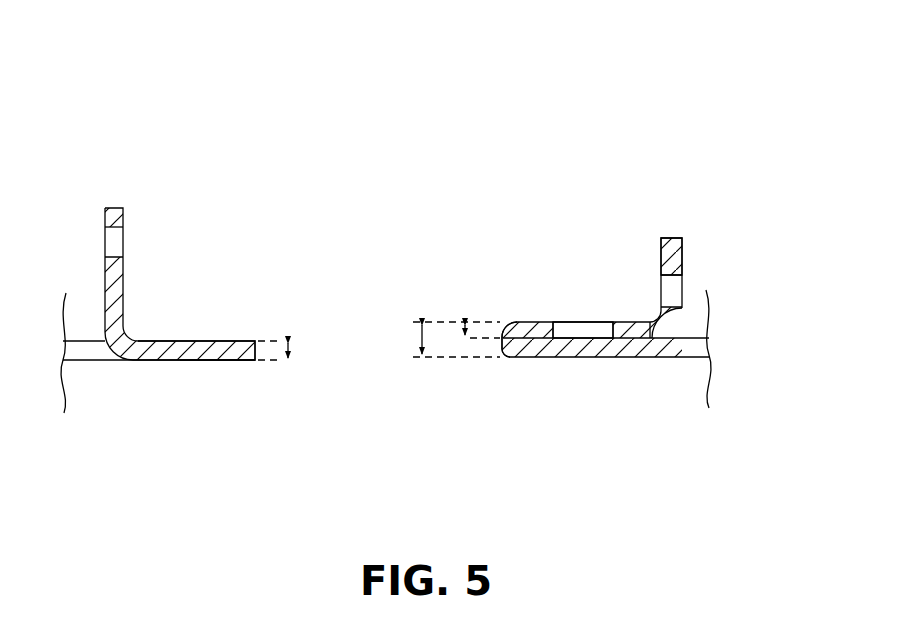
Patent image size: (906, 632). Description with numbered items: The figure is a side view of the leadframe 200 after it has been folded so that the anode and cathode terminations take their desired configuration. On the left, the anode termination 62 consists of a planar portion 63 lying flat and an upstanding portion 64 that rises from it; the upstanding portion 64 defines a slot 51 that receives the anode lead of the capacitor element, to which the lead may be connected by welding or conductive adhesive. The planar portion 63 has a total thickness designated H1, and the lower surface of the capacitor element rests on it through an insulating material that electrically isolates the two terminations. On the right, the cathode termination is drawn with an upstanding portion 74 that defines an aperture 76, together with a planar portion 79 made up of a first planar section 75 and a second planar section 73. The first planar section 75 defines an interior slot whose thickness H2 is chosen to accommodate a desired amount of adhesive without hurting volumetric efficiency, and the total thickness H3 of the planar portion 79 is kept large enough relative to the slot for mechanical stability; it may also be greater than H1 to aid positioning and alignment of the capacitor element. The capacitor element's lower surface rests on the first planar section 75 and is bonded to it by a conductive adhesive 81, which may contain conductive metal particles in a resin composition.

The leadframe 200 is at (412, 98).
The slot 51 is at (163, 294).
The upstanding portion 64 is at (107, 218).
The planar portion 63 is at (222, 349).
The anode termination 62 is at (209, 364).
The first planar section 75 is at (606, 305).
The conductive adhesive 81 is at (586, 326).
The planar portion 79 is at (500, 351).
The second planar section 73 is at (578, 359).
The upstanding portion 74 is at (684, 250).
The aperture 76 is at (721, 243).